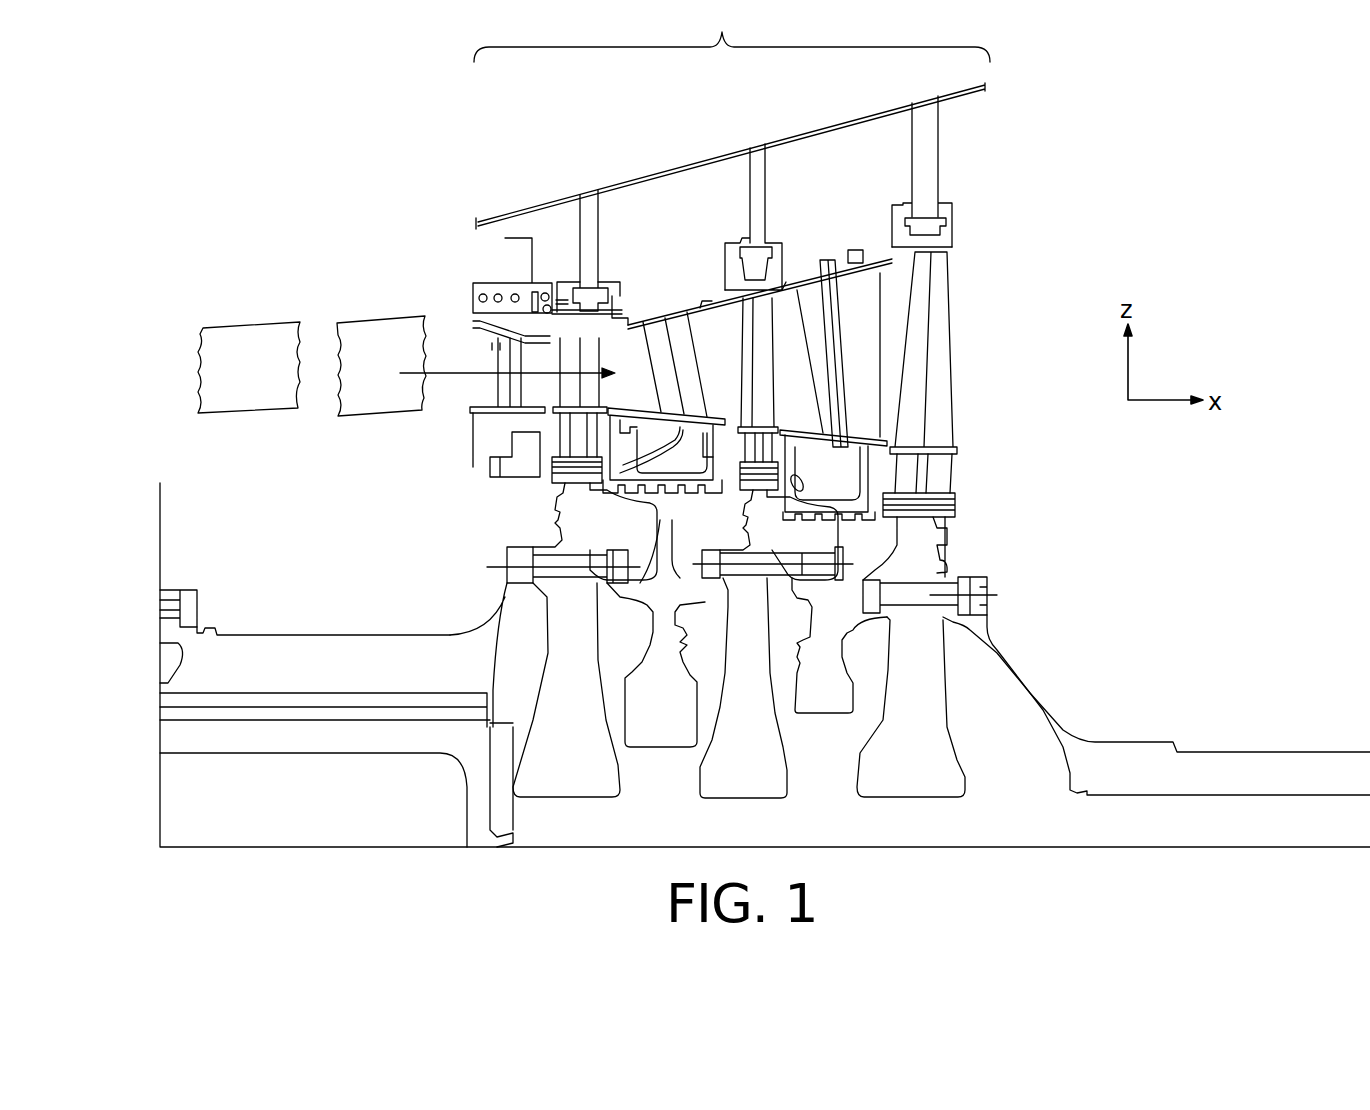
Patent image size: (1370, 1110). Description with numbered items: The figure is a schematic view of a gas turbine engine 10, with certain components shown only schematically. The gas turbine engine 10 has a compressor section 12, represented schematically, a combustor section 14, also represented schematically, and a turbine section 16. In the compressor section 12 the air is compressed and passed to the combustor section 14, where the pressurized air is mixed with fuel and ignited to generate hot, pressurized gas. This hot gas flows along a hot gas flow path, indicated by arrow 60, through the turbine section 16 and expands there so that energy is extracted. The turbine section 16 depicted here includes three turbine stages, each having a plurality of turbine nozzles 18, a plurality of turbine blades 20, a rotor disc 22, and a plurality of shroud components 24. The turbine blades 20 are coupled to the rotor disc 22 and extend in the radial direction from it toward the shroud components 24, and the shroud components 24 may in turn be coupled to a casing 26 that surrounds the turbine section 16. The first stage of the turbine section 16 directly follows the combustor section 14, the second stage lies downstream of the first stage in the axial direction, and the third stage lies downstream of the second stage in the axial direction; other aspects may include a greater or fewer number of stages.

The gas turbine engine 10 is at (1187, 204).
The compressor section 12 is at (250, 326).
The combustor section 14 is at (378, 322).
The turbine section 16 is at (732, 33).
The turbine nozzles 18 is at (474, 418).
The turbine blades 20 is at (590, 360).
The rotor disc 22 is at (558, 522).
The shroud components 24 is at (620, 292).
The casing 26 is at (866, 118).
The hot gas flow path 60 is at (476, 368).